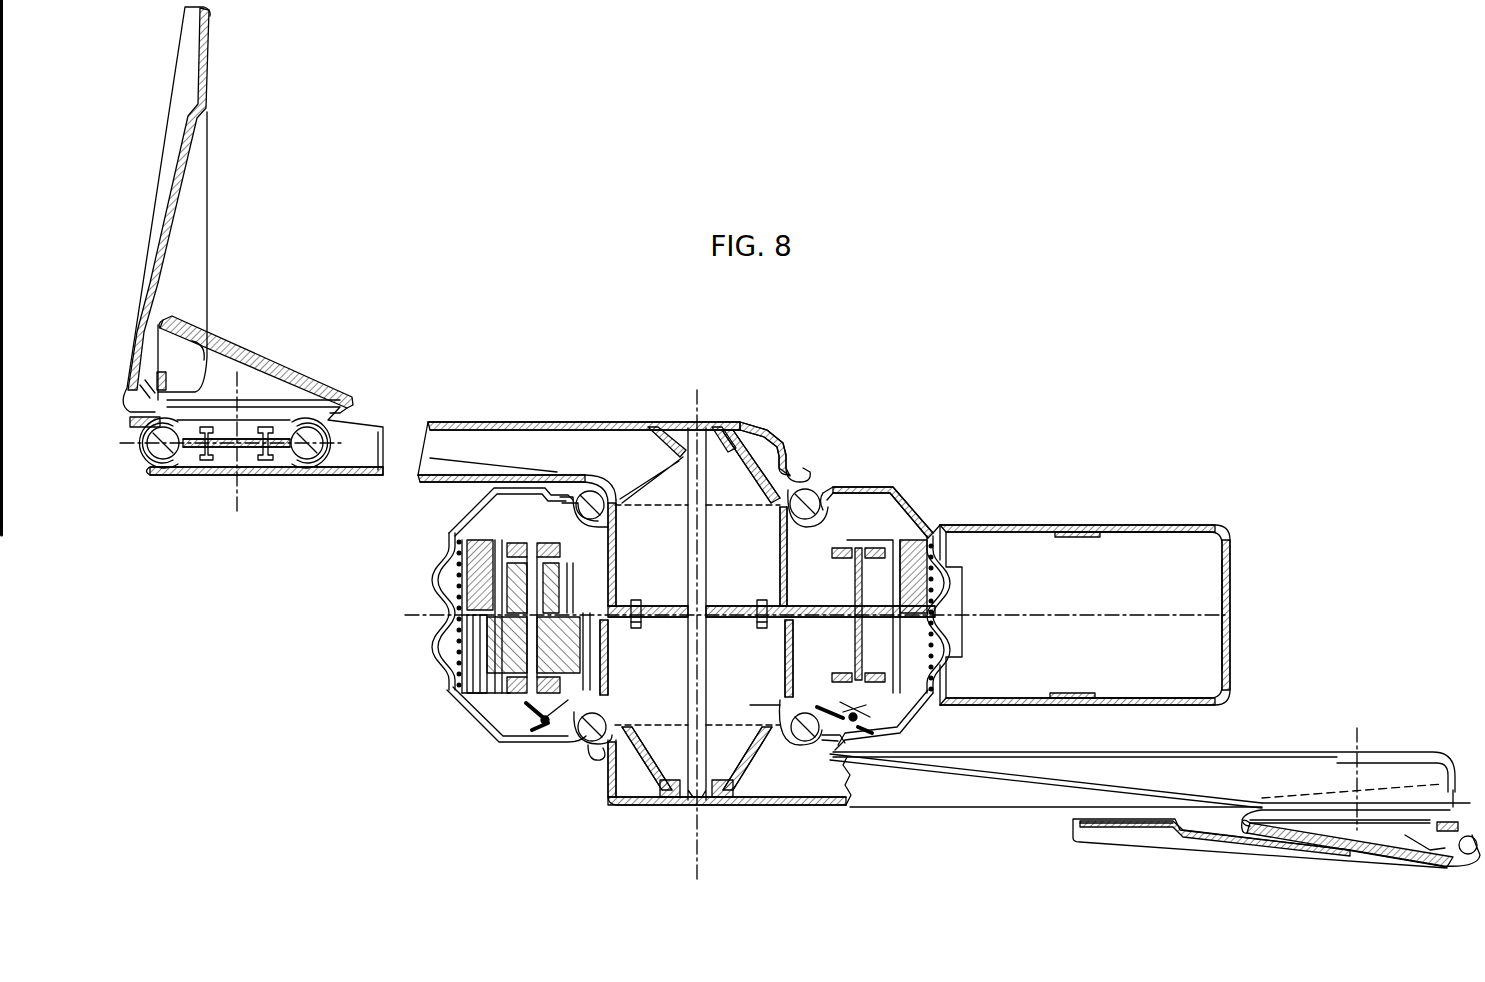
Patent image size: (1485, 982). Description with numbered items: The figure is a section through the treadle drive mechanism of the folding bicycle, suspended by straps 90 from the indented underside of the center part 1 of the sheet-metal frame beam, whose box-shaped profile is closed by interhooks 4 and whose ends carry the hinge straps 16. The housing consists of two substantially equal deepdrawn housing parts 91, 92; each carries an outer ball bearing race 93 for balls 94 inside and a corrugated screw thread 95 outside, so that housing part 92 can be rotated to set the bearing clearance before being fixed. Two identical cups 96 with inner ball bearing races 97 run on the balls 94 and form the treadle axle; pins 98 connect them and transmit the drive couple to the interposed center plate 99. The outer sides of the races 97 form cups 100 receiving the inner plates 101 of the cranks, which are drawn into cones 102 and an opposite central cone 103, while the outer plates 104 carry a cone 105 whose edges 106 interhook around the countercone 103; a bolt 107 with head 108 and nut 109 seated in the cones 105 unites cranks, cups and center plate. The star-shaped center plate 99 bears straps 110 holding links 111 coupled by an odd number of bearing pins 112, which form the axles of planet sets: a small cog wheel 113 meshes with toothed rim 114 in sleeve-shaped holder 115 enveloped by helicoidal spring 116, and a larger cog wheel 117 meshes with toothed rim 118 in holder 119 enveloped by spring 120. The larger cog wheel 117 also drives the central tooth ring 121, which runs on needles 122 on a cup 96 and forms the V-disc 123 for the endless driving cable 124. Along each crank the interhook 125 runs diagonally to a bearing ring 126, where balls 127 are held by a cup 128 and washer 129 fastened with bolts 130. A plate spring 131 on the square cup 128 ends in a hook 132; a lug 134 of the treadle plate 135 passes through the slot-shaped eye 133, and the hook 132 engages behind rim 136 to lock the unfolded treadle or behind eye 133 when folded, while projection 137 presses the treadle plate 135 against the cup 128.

The center part 1 is at (1145, 527).
The interhooks 4 is at (1075, 532).
The straps 16 is at (1231, 600).
The straps 90 is at (1012, 527).
The housing part 91 is at (903, 727).
The housing part 92 is at (793, 555).
The outer ball bearing race 93 is at (866, 485).
The balls 94 is at (818, 495).
The corrugated screw thread 95 is at (445, 598).
The cups 96 is at (863, 530).
The inner ball bearing races 97 is at (800, 478).
The pins 98 is at (757, 602).
The center plate 99 is at (657, 600).
The cups 100 is at (593, 476).
The inner plates 101 is at (478, 470).
The cones 102 is at (620, 750).
The cone 103 is at (670, 446).
The outer plates 104 is at (475, 422).
The cone 105 is at (730, 420).
The edges 106 is at (642, 465).
The bolt 107 is at (706, 490).
The head 108 is at (683, 797).
The nut 109 is at (712, 444).
The straps 110 is at (855, 578).
The links 111 is at (447, 687).
The bearing pins 112 is at (527, 585).
The small cog wheel 113 is at (500, 552).
The toothed rim 114 is at (498, 545).
The sleeve-shaped holder 115 is at (505, 540).
The helicoidal spring 116 is at (513, 573).
The larger cog wheel 117 is at (445, 623).
The toothed rim 118 is at (458, 681).
The sleeve-shaped holder 119 is at (460, 697).
The helicoidal spring 120 is at (452, 657).
The central tooth ring 121 is at (543, 730).
The needles 122 is at (600, 685).
The V-disc 123 is at (868, 748).
The driving cable 124 is at (493, 735).
The interhook 125 is at (1100, 775).
The bearing ring 126 is at (330, 473).
The balls 127 is at (303, 448).
The cup 128 is at (297, 422).
The washer 129 is at (230, 452).
The bolts 130 is at (200, 457).
The plate spring 131 is at (257, 352).
The hook 132 is at (137, 385).
The slot-shaped eye 133 is at (167, 378).
The lug 134 is at (153, 385).
The treadle plate 135 is at (166, 184).
The rim 136 is at (178, 327).
The projection 137 is at (1403, 843).